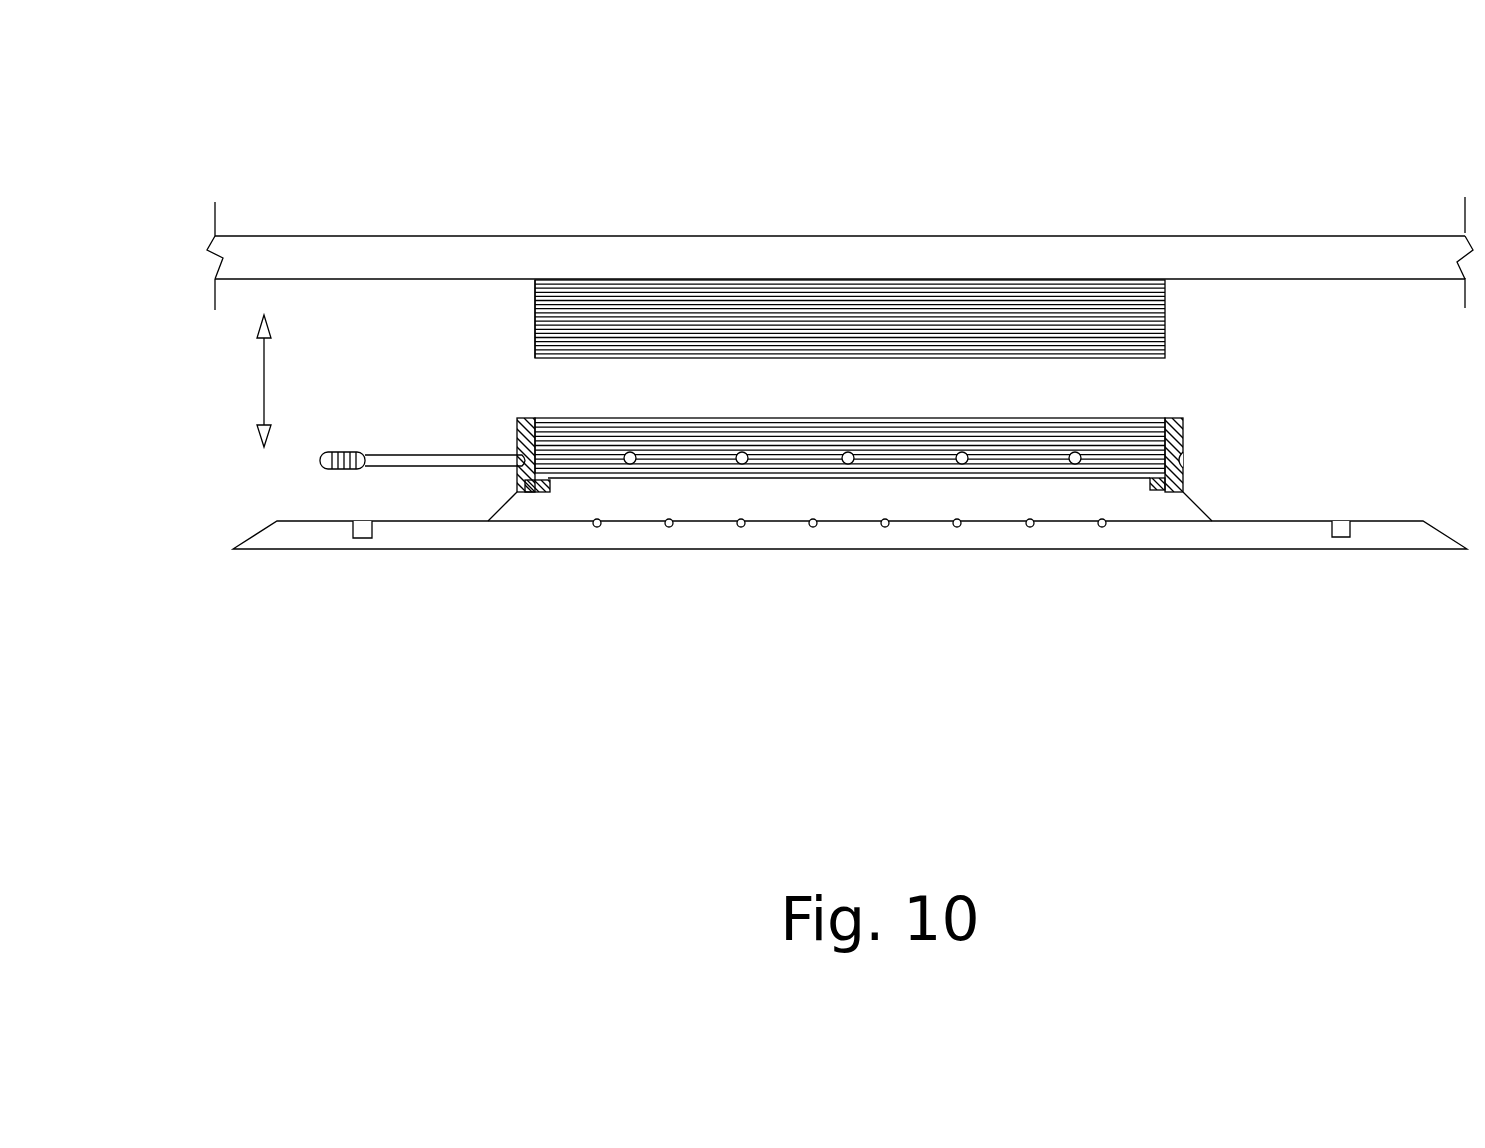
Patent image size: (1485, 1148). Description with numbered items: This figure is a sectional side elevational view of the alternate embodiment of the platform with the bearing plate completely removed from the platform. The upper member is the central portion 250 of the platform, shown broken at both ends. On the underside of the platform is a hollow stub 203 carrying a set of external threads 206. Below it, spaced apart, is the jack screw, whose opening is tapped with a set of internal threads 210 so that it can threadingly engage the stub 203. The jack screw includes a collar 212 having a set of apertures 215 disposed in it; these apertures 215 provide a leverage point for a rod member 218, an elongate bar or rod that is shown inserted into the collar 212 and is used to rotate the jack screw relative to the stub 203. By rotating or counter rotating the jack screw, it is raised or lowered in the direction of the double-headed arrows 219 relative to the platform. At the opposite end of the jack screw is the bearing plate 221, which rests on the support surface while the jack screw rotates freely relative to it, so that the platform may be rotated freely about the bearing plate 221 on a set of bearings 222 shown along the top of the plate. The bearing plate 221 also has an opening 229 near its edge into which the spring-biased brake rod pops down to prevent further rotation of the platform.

The hollow stub 203 is at (910, 300).
The external threads 206 is at (533, 298).
The central portion 250 is at (1290, 258).
The collar 212 is at (1172, 415).
The apertures 215 is at (1185, 458).
The rod member 218 is at (392, 462).
The arrows 219 is at (257, 372).
The internal threads 210 is at (540, 452).
The bearing plate 221 is at (720, 535).
The set of bearings 222 is at (888, 535).
The opening 229 is at (1340, 537).